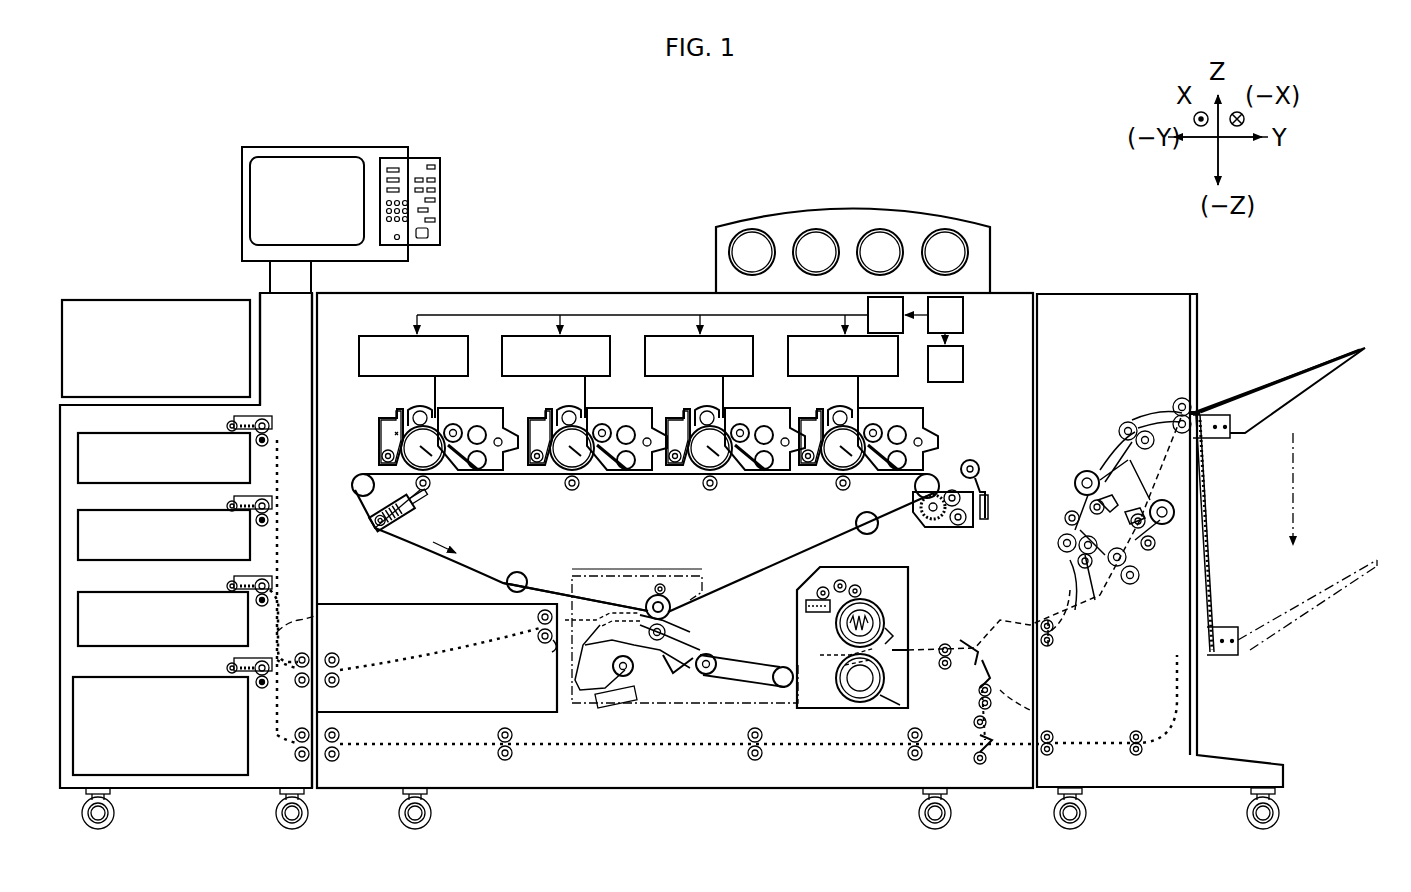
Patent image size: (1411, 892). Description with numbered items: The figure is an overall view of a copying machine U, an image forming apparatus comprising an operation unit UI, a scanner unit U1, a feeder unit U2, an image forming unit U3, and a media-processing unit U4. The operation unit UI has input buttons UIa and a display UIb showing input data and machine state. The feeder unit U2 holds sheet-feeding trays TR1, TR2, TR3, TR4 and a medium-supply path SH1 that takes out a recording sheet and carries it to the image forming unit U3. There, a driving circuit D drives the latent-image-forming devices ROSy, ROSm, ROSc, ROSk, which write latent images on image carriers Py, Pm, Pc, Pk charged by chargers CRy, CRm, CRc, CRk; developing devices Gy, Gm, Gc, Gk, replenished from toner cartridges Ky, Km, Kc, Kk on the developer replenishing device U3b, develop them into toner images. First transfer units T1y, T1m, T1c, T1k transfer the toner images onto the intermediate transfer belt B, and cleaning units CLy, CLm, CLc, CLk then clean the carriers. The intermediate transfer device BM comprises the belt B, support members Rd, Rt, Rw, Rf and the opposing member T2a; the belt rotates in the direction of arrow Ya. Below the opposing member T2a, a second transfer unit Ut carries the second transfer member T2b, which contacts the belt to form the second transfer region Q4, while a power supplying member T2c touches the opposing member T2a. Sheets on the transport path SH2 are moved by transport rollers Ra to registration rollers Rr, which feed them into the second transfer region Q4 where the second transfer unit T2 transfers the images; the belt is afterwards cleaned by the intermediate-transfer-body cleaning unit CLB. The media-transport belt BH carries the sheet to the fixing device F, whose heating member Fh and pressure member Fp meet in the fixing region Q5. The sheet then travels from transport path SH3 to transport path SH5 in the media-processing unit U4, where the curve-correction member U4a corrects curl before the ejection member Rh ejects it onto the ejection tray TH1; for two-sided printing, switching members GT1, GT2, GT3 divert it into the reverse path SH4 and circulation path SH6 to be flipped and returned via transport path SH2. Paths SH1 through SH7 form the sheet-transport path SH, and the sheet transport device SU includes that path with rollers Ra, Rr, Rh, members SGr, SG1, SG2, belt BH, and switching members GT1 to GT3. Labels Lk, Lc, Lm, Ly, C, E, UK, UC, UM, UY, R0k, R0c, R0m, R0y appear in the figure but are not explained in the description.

The copying machine U is at (126, 238).
The scanner unit U1 is at (155, 346).
The feeder unit U2 is at (276, 308).
The image forming unit U3 is at (598, 290).
The developer replenishing device U3b is at (962, 214).
The media-processing unit U4 is at (1095, 267).
The curve-correction member U4a is at (1102, 450).
The operation unit UI is at (403, 120).
The input buttons UIa is at (458, 182).
The display UIb is at (290, 186).
The sheet-feeding tray TR1 is at (128, 454).
The sheet-feeding tray TR2 is at (128, 534).
The sheet-feeding tray TR3 is at (128, 617).
The sheet-feeding tray TR4 is at (128, 702).
The toner cartridge Kk is at (752, 245).
The toner cartridge Kc is at (816, 245).
The toner cartridge Km is at (880, 245).
The toner cartridge Ky is at (945, 245).
The latent-image-forming device ROSk is at (452, 350).
The latent-image-forming device ROSc is at (572, 350).
The latent-image-forming device ROSm is at (690, 350).
The latent-image-forming device ROSy is at (823, 345).
The black laser beam Lk is at (435, 368).
The cyan laser beam Lc is at (583, 368).
The magenta laser beam Lm is at (723, 368).
The yellow laser beam Ly is at (866, 368).
The driving circuit D is at (886, 309).
The controller C is at (950, 315).
The power supply circuit E is at (950, 358).
The black imaging unit UK is at (364, 440).
The cyan imaging unit UC is at (557, 409).
The magenta imaging unit UM is at (702, 409).
The yellow imaging unit UY is at (918, 440).
The image carrier Pk is at (435, 467).
The image carrier Pc is at (555, 470).
The image carrier Pm is at (712, 455).
The image carrier Py is at (847, 470).
The charger CRk is at (414, 416).
The charger CRc is at (569, 430).
The charger CRm is at (707, 413).
The charger CRy is at (840, 414).
The developing device Gk is at (475, 468).
The developing device Gc is at (614, 463).
The developing device Gm is at (770, 465).
The developing device Gy is at (933, 464).
The black developing roller R0k is at (435, 470).
The cyan developing roller R0c is at (572, 460).
The magenta developing roller R0m is at (720, 458).
The yellow developing roller R0y is at (880, 449).
The cleaning unit CLk is at (372, 434).
The cleaning unit CLc is at (543, 435).
The cleaning unit CLm is at (691, 440).
The cleaning unit CLy is at (808, 460).
The first transfer unit T1k is at (415, 493).
The first transfer unit T1c is at (572, 492).
The first transfer unit T1m is at (710, 485).
The first transfer unit T1y is at (843, 477).
The intermediate transfer belt B is at (830, 544).
The intermediate transfer device BM is at (495, 578).
The support member Rd is at (925, 495).
The support member Rt is at (383, 523).
The support member Rw is at (525, 584).
The support member Rf is at (360, 488).
The arrow Ya is at (457, 554).
The second transfer unit T2 is at (648, 585).
The opposing member T2a is at (650, 588).
The second transfer member T2b is at (652, 586).
The power supplying member T2c is at (658, 606).
The intermediate-transfer-body cleaning unit CLB is at (945, 541).
The second transfer region Q4 is at (676, 616).
The fixing region Q5 is at (837, 661).
The sheet transport device component SG1 is at (634, 666).
The sheet transport device component SG2 is at (712, 652).
The sheet transport device component SGr is at (547, 645).
The media-transport belt BH is at (747, 687).
The second transfer unit Ut is at (655, 715).
The fixing device F is at (792, 604).
The heating member Fh is at (867, 612).
The pressure member Fp is at (830, 703).
The registration rollers Rr is at (537, 619).
The transport rollers Ra is at (335, 660).
The sheet-transport path SH is at (271, 767).
The medium-supply path SH1 is at (320, 626).
The transport path SH2 is at (453, 672).
The transport path SH3 is at (1005, 628).
The reverse path SH4 is at (1040, 702).
The transport path SH5 is at (1078, 613).
The circulation path SH6 is at (410, 750).
The transport path SH7 is at (1085, 744).
The sheet transport device SU is at (487, 804).
The switching member GT1 is at (965, 642).
The switching member GT2 is at (980, 680).
The switching member GT3 is at (985, 760).
The ejection member Rh is at (1180, 402).
The ejection tray TH1 is at (1319, 372).